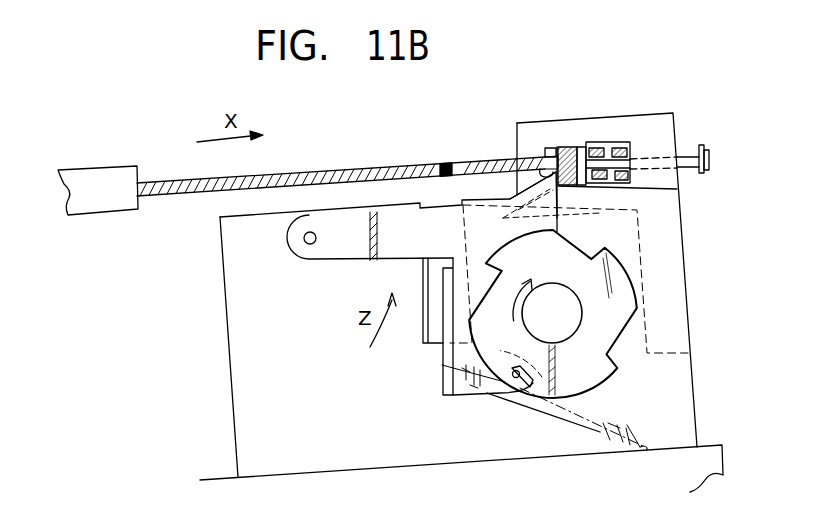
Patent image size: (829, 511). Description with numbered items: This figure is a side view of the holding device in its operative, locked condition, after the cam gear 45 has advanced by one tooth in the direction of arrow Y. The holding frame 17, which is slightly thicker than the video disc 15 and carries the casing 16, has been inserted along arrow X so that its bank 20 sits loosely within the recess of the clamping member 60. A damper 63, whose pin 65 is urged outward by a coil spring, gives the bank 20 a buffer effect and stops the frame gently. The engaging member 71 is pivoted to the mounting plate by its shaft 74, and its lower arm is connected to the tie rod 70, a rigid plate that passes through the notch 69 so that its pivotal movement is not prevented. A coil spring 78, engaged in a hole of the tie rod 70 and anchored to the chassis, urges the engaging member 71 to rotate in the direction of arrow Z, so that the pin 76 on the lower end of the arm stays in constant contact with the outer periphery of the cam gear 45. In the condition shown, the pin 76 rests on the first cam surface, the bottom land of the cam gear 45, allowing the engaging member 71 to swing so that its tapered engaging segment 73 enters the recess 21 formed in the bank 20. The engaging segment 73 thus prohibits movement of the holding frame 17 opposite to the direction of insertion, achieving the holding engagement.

The video disc 15 is at (307, 172).
The casing 16 is at (113, 170).
The holding frame 17 is at (483, 161).
The bank 20 is at (570, 147).
The recess 21 is at (530, 157).
The cam gear 45 is at (605, 367).
The clamping member 60 is at (545, 118).
The damper 63 is at (614, 148).
The pin 65 is at (688, 153).
The notch 69 is at (428, 285).
The tie rod 70 is at (447, 318).
The engaging member 71 is at (343, 262).
The engaging segment 73 is at (560, 216).
The shaft 74 is at (305, 243).
The pin 76 is at (514, 379).
The coil spring 78 is at (532, 405).